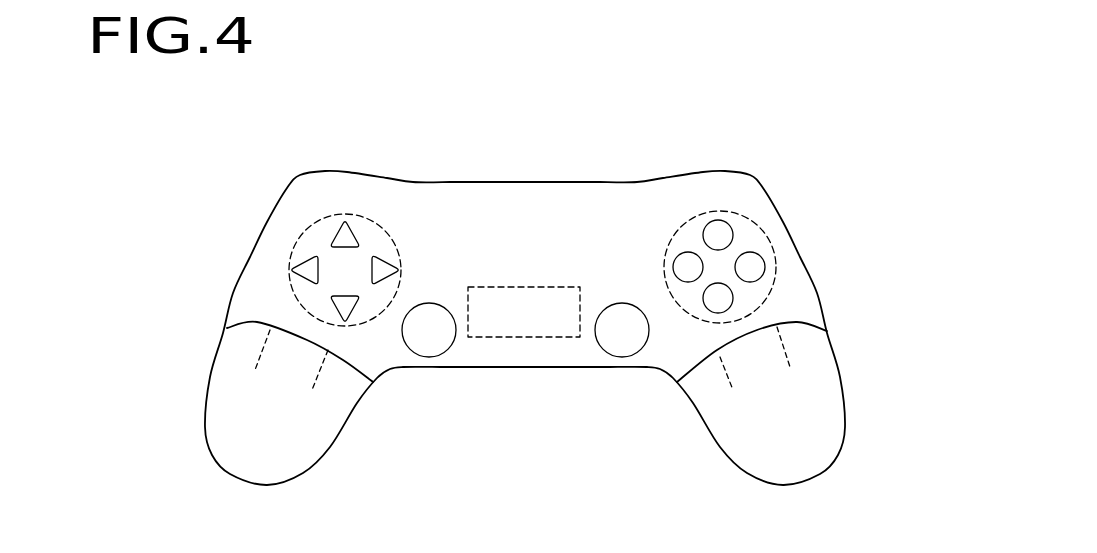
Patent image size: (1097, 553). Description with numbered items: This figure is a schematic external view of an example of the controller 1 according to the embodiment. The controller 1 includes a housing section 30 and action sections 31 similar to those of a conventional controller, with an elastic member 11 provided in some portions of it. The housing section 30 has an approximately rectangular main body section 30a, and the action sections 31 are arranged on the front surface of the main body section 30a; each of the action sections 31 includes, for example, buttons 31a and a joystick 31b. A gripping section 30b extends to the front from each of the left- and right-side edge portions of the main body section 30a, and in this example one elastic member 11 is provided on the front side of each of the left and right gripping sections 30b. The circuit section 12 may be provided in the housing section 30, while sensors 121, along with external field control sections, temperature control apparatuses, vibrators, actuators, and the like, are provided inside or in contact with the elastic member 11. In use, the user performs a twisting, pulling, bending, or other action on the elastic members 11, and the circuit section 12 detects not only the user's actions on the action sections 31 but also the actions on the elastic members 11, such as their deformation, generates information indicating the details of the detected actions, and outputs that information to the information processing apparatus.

The controller 1 is at (505, 420).
The elastic member 11 is at (232, 387).
The circuit section 12 is at (540, 328).
The sensors 121 is at (268, 372).
The housing section 30 is at (478, 180).
The main body section 30a is at (526, 170).
The gripping section 30b is at (224, 291).
The action sections 31 is at (408, 118).
The buttons 31a is at (323, 200).
The joystick 31b is at (426, 296).